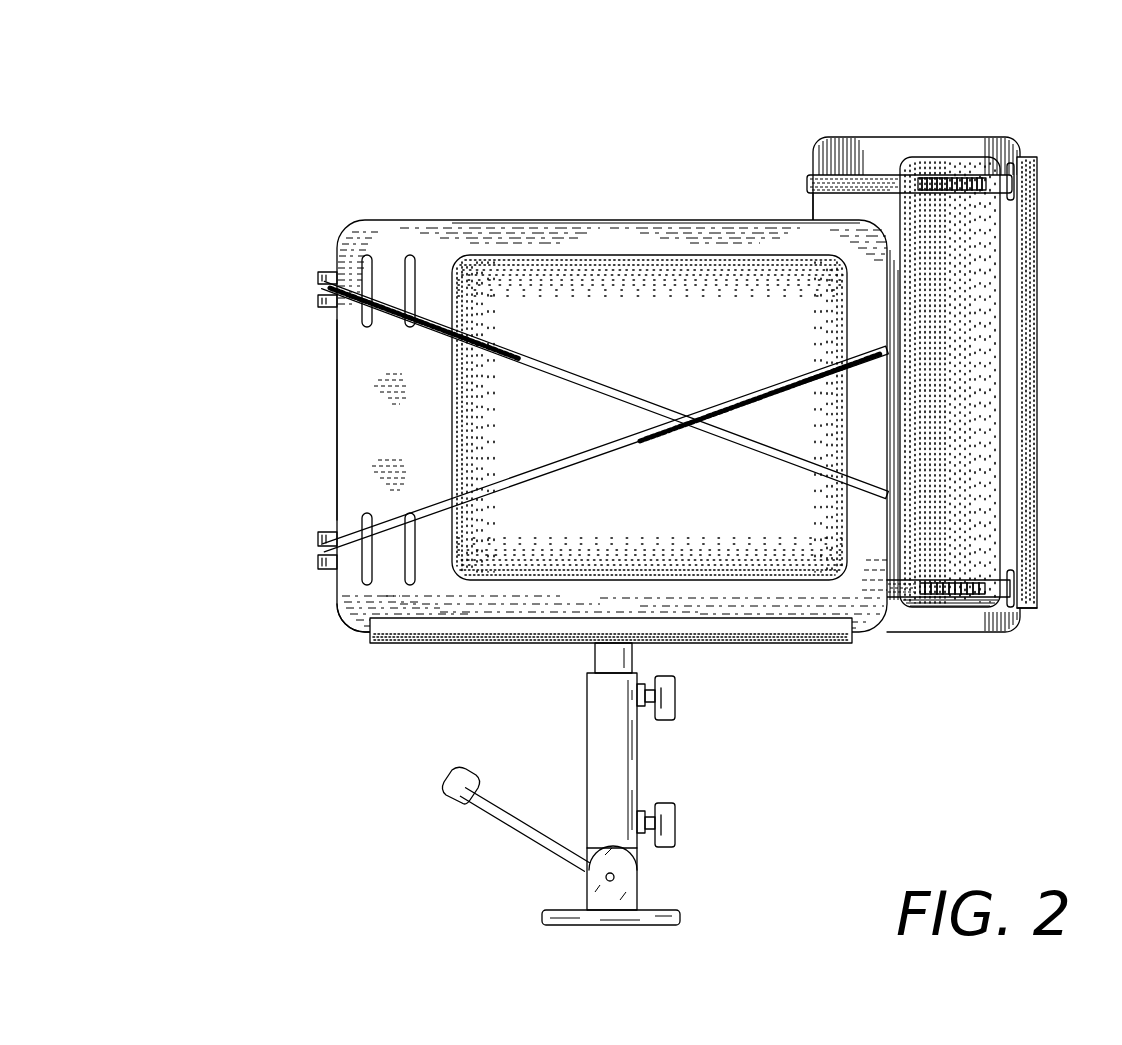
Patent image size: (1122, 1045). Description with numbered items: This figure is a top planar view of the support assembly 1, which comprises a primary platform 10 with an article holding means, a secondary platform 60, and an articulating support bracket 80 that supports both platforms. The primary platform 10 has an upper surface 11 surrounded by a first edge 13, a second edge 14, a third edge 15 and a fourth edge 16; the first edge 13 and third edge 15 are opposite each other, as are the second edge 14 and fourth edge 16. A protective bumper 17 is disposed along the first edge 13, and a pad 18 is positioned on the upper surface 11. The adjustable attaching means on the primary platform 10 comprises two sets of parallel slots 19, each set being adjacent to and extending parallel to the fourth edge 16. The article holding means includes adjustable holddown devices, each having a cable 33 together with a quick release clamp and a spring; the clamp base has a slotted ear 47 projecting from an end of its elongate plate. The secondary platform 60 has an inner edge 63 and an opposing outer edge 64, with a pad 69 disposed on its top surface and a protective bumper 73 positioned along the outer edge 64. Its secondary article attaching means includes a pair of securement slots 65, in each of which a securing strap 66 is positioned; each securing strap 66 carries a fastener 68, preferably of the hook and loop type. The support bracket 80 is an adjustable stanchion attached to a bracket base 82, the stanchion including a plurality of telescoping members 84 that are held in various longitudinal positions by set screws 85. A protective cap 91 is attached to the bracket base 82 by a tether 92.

The support assembly 1 is at (238, 407).
The primary platform 10 is at (490, 220).
The upper surface 11 is at (373, 446).
The first edge 13 is at (367, 635).
The second edge 14 is at (890, 605).
The third edge 15 is at (555, 220).
The fourth edge 16 is at (337, 565).
The protective bumper 17 is at (437, 645).
The pad 18 is at (645, 362).
The parallel slots 19 is at (410, 255).
The cable 33 is at (572, 455).
The slotted ear 47 is at (320, 275).
The secondary platform 60 is at (857, 137).
The inner edge 63 is at (812, 210).
The outer edge 64 is at (1040, 150).
The securement slots 65 is at (1012, 163).
The securing strap 66 is at (886, 175).
The fastener 68 is at (950, 182).
The pad 69 is at (935, 382).
The protective bumper 73 is at (1040, 606).
The support bracket 80 is at (563, 742).
The bracket base 82 is at (587, 893).
The telescoping members 84 is at (587, 708).
The set screws 85 is at (672, 805).
The protective cap 91 is at (445, 793).
The tether 92 is at (507, 822).